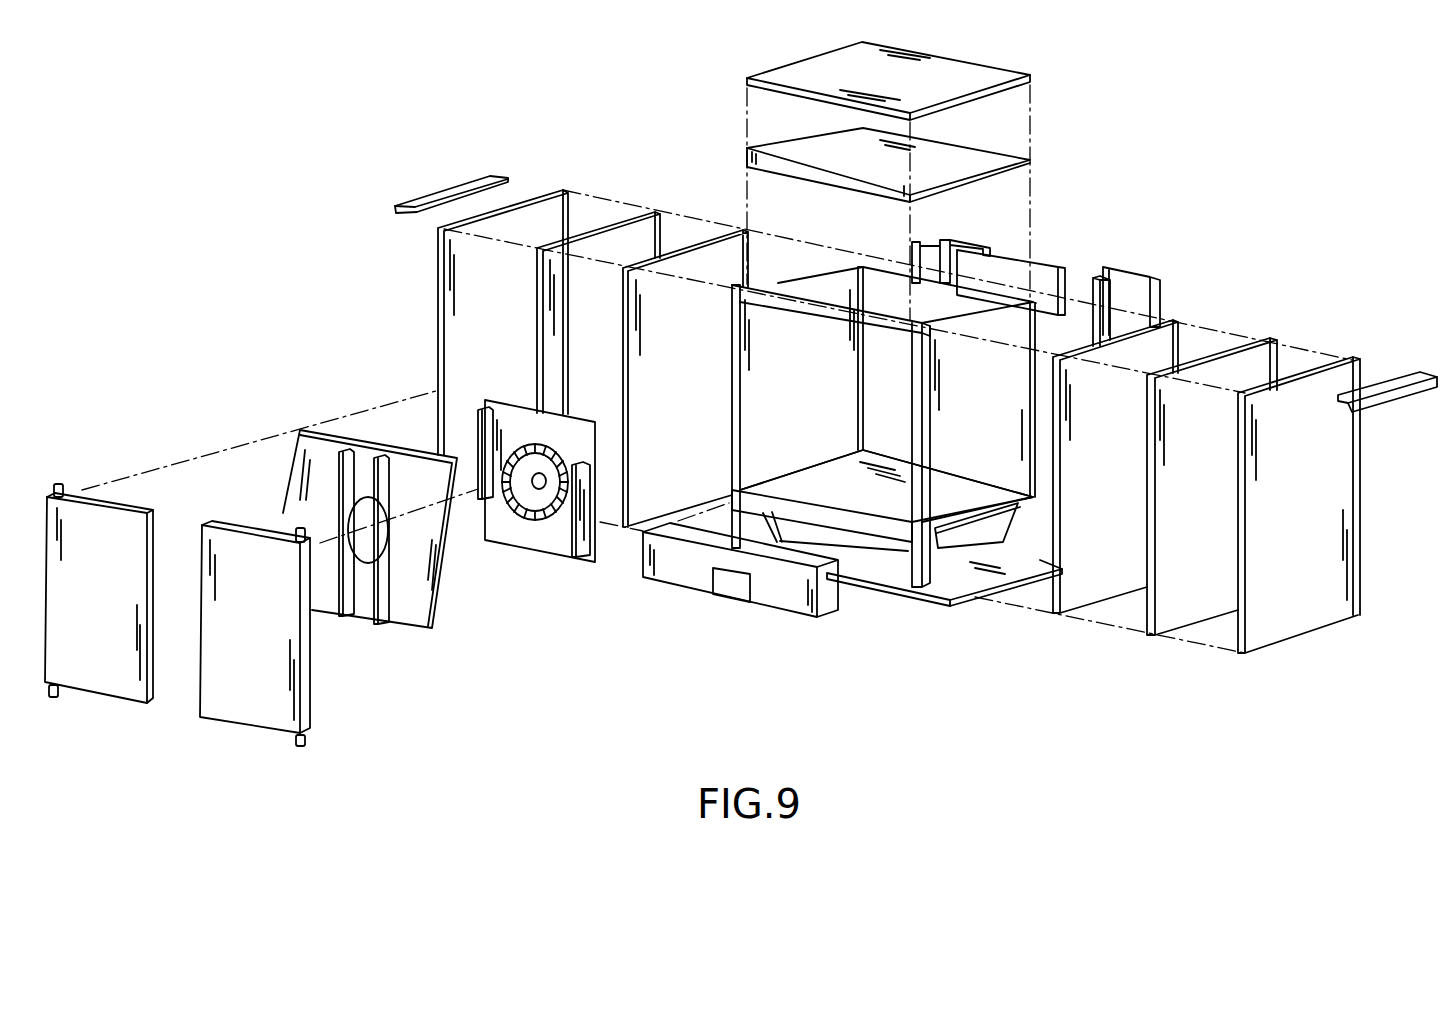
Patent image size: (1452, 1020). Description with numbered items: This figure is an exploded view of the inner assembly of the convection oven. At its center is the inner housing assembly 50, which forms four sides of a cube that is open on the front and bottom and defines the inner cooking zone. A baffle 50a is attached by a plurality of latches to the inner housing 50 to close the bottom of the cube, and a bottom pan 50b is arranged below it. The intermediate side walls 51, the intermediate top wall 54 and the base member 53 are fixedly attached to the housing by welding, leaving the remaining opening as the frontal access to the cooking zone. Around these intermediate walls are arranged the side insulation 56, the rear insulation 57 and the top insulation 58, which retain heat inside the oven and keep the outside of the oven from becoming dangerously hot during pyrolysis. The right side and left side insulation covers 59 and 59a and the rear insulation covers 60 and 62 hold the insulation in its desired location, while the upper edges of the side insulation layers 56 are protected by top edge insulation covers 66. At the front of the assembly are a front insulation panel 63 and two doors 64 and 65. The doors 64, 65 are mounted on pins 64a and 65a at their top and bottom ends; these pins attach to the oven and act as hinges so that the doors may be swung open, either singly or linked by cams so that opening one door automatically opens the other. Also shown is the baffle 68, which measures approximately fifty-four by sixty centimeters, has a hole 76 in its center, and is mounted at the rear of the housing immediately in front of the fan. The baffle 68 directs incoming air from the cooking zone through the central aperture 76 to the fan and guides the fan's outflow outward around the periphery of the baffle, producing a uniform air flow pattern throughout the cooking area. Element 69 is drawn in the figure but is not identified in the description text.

The inner housing assembly 50 is at (845, 292).
The baffle 50a is at (872, 483).
The bottom pan 50b is at (847, 537).
The intermediate side walls 51 is at (708, 257).
The base member 53 is at (958, 606).
The intermediate top wall 54 is at (993, 153).
The side insulation 56 is at (632, 232).
The rear insulation 57 is at (1097, 278).
The top insulation 58 is at (938, 63).
The right side insulation cover 59 is at (538, 208).
The left side insulation cover 59a is at (1352, 357).
The rear insulation cover 60 is at (940, 242).
The rear insulation cover 62 is at (1127, 278).
The front insulation panel 63 is at (773, 608).
The door 64 is at (113, 614).
The pins 64a is at (68, 485).
The door 65 is at (277, 634).
The pins 65a is at (296, 529).
The top edge insulation cover 66 is at (460, 182).
The baffle 68 is at (399, 562).
The fan panel 69 is at (532, 548).
The hole 76 is at (372, 530).